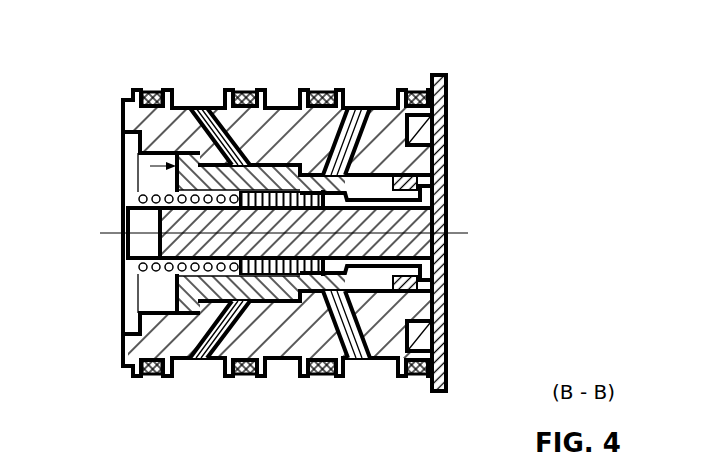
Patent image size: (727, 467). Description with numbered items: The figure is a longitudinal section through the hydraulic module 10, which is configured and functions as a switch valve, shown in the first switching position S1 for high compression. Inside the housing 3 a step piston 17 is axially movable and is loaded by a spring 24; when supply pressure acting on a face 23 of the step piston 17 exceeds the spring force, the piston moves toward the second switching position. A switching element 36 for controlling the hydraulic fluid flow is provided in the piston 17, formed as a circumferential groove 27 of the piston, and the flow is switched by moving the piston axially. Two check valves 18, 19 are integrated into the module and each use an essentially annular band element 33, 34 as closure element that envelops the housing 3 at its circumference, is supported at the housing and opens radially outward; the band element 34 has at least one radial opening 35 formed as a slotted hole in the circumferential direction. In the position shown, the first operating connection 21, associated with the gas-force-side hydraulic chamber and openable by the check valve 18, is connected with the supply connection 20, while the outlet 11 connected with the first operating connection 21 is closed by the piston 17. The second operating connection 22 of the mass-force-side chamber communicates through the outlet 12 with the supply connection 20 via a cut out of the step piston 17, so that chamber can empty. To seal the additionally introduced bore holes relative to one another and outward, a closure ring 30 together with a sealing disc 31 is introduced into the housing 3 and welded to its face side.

The housing 3 is at (112, 113).
The hydraulic module 10 is at (328, 230).
The outlet 11 is at (152, 93).
The outlet 12 is at (324, 97).
The step piston 17 is at (138, 167).
The check valve 18 is at (219, 62).
The band element 33 is at (214, 98).
The check valve 19 is at (390, 62).
The band element 34 is at (386, 98).
The supply connection 20 is at (268, 378).
The first operating connection 21 is at (181, 378).
The second operating connection 22 is at (348, 378).
The face 23 is at (287, 360).
The spring 24 is at (128, 291).
The circumferential groove 27 is at (466, 133).
The switching element 36 is at (446, 152).
The closure ring 30 is at (447, 337).
The sealing disc 31 is at (447, 360).
The radial opening 35 is at (198, 110).
The first switching position S1 is at (537, 211).